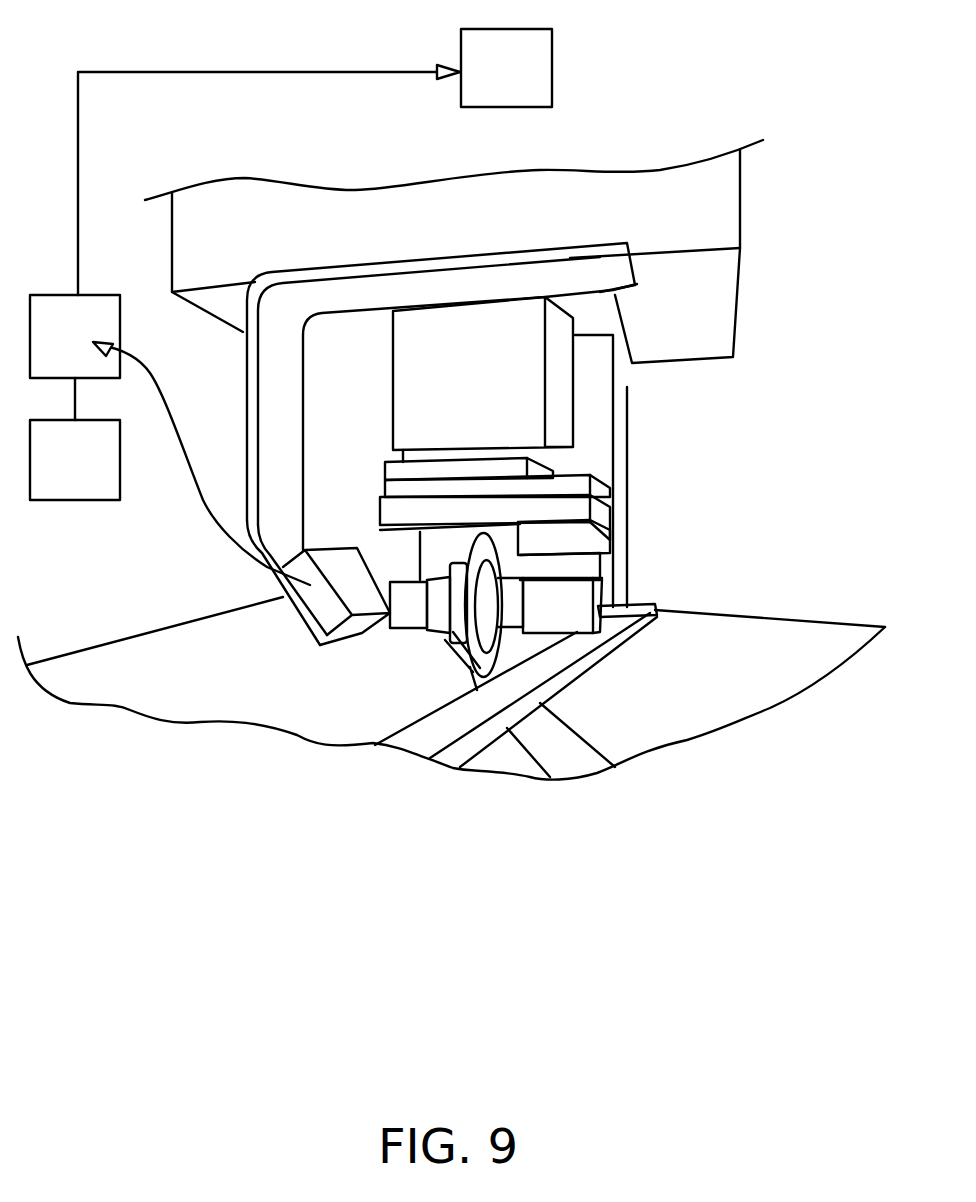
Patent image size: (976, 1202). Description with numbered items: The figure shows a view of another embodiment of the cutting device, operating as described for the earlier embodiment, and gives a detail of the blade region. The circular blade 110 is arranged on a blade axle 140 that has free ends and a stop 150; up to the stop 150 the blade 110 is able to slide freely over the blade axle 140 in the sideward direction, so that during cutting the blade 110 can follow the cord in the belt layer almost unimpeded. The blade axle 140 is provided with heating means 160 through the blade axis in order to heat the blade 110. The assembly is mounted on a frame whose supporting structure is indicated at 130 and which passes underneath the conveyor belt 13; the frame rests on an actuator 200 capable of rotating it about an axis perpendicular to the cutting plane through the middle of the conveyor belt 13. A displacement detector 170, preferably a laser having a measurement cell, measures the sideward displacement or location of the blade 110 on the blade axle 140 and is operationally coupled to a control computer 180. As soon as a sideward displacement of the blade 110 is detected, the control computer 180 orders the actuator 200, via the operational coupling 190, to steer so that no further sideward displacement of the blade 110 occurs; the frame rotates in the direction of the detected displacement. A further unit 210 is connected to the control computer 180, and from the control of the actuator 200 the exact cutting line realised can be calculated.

The conveyor belt 13 is at (707, 658).
The blade 110 is at (573, 635).
The support plate 130 is at (716, 207).
The blade axle 140 is at (400, 623).
The stop 150 is at (438, 620).
The heating means 160 is at (565, 592).
The displacement detector 170 is at (317, 605).
The control computer 180 is at (170, 440).
The operational coupling 190 is at (269, 151).
The actuator 200 is at (506, 68).
The memory unit 210 is at (443, 812).